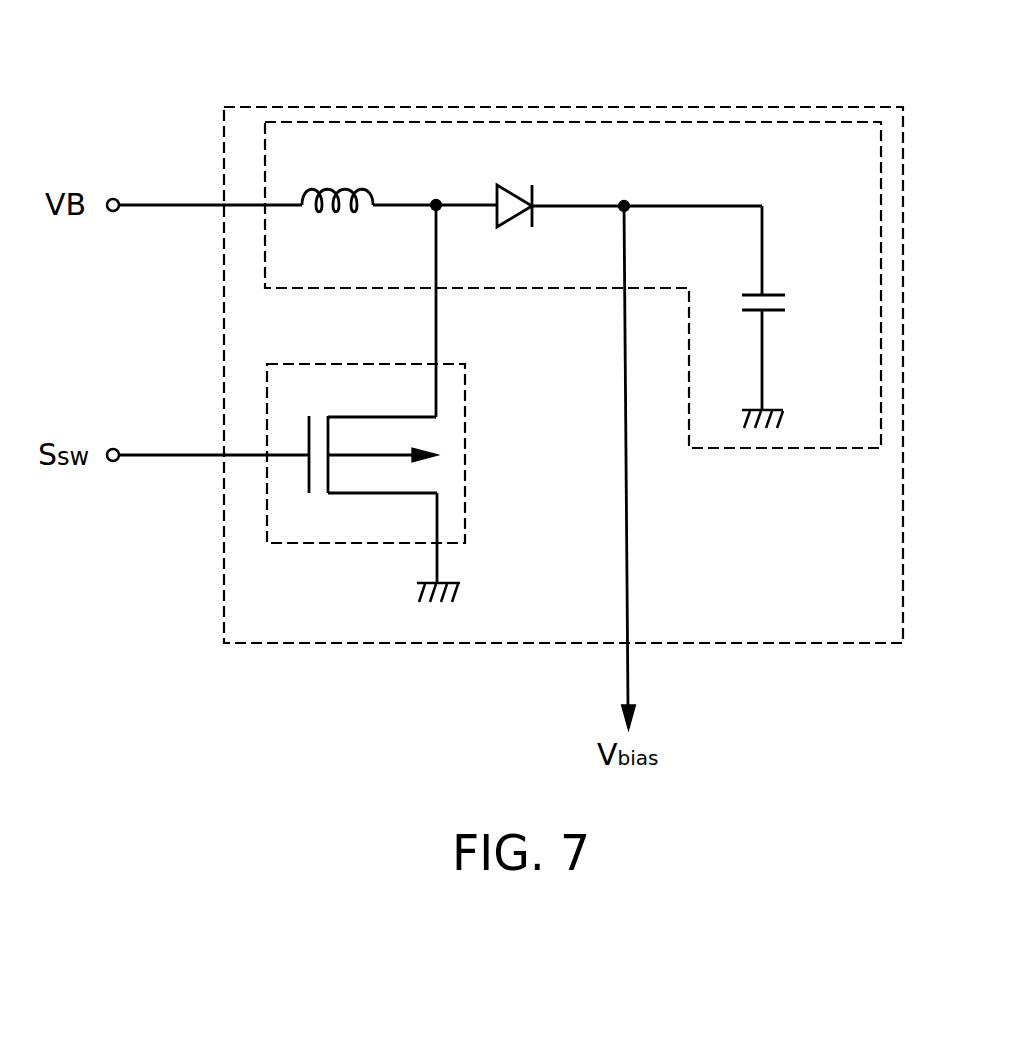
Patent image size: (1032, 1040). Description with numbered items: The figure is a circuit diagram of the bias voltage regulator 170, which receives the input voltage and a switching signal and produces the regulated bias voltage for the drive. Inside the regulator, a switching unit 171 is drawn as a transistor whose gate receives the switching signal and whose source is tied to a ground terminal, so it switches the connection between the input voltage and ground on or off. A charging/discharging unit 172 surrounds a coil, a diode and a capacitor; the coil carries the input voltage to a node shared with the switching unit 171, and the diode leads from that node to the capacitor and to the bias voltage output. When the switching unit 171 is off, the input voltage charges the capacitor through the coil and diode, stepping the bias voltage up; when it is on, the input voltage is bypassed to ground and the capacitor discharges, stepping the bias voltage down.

The bias voltage regulator 170 is at (523, 107).
The switching unit 171 is at (466, 503).
The charging/discharging unit 172 is at (788, 449).